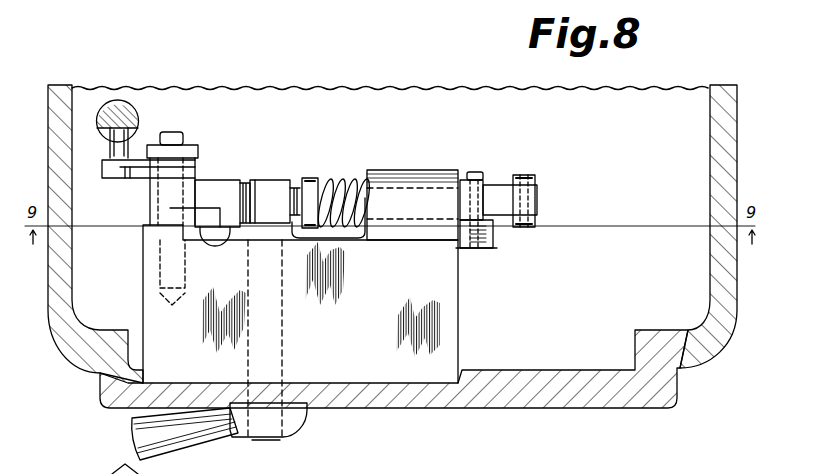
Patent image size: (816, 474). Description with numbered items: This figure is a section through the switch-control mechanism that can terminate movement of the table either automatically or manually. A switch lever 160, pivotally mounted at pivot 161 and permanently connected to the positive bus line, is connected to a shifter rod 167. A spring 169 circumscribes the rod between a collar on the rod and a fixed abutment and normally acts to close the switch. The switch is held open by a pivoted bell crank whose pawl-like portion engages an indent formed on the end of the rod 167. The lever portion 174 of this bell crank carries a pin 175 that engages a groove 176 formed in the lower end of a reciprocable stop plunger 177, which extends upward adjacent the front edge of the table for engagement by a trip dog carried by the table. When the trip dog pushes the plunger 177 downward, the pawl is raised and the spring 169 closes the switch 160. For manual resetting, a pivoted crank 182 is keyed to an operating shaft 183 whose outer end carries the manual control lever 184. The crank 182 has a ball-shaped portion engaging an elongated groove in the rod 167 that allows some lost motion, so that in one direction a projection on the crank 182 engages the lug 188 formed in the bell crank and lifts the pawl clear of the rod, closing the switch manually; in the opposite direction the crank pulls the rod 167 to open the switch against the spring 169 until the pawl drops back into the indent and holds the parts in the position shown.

The switch lever 160 is at (505, 228).
The pivot 161 is at (478, 174).
The shifter rod 167 is at (537, 200).
The spring 169 is at (350, 178).
The lever portion 174 is at (127, 175).
The pin 175 is at (102, 170).
The groove 176 is at (105, 142).
The stop plunger 177 is at (138, 110).
The pivoted crank 182 is at (278, 182).
The operating shaft 183 is at (273, 440).
The manual control lever 184 is at (202, 445).
The lug 188 is at (207, 187).